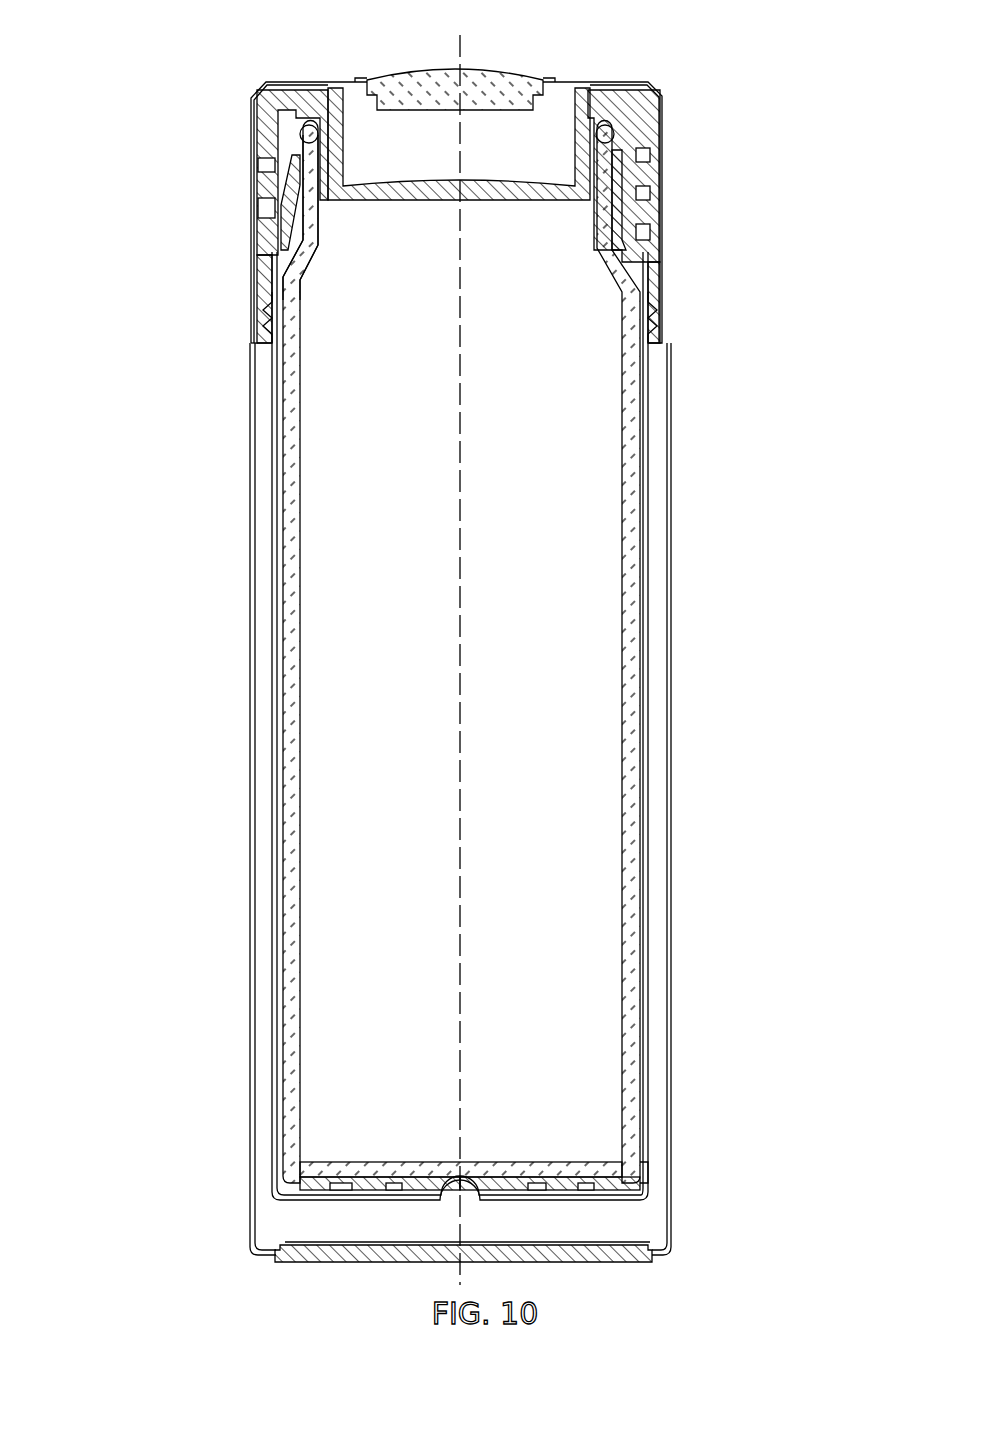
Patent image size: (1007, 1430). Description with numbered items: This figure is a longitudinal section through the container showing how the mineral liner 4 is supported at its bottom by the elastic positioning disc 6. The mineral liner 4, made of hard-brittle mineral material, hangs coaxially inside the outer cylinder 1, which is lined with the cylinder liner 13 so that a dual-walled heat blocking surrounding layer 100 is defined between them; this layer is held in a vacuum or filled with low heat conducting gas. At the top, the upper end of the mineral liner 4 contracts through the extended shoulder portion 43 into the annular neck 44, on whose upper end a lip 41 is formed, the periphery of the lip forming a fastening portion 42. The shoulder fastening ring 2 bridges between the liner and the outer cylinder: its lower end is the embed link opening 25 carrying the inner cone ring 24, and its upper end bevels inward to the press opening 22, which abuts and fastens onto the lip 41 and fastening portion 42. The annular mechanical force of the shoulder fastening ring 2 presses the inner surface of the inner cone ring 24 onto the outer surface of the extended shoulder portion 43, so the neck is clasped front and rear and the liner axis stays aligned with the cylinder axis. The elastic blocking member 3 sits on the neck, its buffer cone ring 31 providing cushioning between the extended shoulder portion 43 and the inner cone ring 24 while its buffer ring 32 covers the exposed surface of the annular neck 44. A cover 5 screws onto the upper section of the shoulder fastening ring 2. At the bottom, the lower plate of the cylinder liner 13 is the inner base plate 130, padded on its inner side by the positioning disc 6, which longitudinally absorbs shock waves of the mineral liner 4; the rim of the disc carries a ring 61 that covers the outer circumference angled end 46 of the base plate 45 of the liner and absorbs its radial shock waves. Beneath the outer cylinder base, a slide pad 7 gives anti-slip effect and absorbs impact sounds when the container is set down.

The outer cylinder 1 is at (253, 673).
The shoulder fastening ring 2 is at (222, 256).
The elastic blocking member 3 is at (300, 218).
The mineral liner 4 is at (310, 578).
The cover 5 is at (578, 60).
The elastic positioning disc 6 is at (567, 1172).
The slide pad 7 is at (332, 1258).
The cylinder liner 13 is at (274, 522).
The press opening 22 is at (276, 168).
The inner cone ring 24 is at (620, 252).
The embed link opening 25 is at (253, 318).
The buffer cone ring 31 is at (304, 258).
The buffer ring 32 is at (334, 173).
The lip 41 is at (302, 121).
The fastening portion 42 is at (630, 154).
The extended shoulder portion 43 is at (303, 272).
The annular neck 44 is at (310, 192).
The base plate 45 is at (432, 1164).
The outer circumference angled end 46 is at (623, 1164).
The ring 61 is at (652, 1165).
The heat blocking surrounding layer 100 is at (256, 810).
The inner base plate 130 is at (313, 1197).